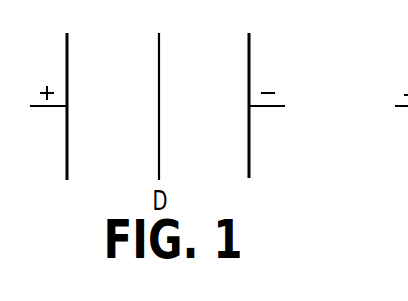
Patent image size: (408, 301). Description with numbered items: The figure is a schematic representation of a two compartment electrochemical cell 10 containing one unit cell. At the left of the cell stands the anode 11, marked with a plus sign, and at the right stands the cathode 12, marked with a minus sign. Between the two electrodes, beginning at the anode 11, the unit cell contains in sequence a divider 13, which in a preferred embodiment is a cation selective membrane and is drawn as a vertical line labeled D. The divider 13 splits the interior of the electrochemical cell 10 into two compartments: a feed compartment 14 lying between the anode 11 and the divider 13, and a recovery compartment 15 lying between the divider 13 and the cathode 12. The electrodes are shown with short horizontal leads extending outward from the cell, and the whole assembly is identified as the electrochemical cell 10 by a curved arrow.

The electrochemical cell 10 is at (290, 37).
The anode 11 is at (50, 93).
The cathode 12 is at (262, 92).
The divider 13 is at (160, 93).
The feed compartment 14 is at (113, 171).
The recovery compartment 15 is at (205, 171).